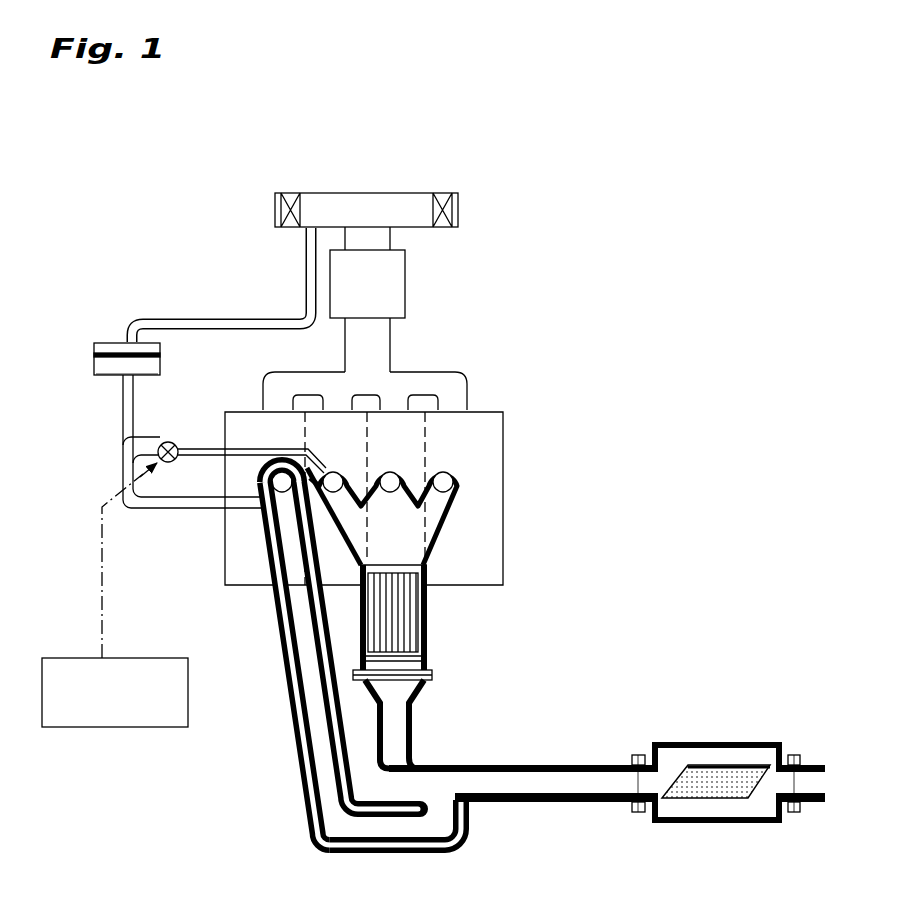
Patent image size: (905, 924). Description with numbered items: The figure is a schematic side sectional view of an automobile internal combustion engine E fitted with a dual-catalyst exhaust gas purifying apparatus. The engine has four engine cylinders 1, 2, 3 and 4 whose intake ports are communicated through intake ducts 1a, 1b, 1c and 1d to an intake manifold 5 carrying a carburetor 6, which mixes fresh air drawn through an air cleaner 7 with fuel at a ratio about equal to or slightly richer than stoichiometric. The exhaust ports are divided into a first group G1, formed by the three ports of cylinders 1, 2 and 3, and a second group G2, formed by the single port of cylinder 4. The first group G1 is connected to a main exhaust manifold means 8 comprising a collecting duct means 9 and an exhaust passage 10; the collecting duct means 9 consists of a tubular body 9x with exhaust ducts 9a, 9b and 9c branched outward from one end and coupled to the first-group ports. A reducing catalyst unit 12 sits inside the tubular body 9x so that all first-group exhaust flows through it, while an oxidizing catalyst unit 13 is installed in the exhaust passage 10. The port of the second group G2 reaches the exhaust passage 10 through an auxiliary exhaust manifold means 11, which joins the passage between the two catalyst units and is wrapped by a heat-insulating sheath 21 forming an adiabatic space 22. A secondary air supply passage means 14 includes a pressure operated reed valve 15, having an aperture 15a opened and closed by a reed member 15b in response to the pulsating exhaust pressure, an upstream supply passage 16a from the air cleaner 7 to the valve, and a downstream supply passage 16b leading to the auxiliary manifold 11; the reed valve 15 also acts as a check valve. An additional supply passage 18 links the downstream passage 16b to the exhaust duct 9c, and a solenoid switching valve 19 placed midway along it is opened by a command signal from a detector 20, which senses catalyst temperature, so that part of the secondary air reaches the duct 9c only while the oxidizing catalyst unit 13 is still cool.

The engine cylinder 1 is at (486, 471).
The engine cylinder 2 is at (423, 473).
The engine cylinder 3 is at (360, 473).
The engine cylinder 4 is at (256, 585).
The intake manifold 5 is at (375, 345).
The carburetor 6 is at (393, 278).
The air cleaner 7 is at (325, 193).
The main exhaust manifold means 8 is at (430, 738).
The collecting duct means 9 is at (433, 652).
The exhaust duct 9a is at (462, 483).
The exhaust duct 9b is at (440, 492).
The exhaust duct 9c is at (300, 498).
The tubular body 9x is at (423, 598).
The exhaust passage 10 is at (527, 763).
The auxiliary exhaust manifold means 11 is at (340, 840).
The reducing catalyst unit 12 is at (400, 618).
The oxidizing catalyst unit 13 is at (710, 742).
The secondary air supply passage means 14 is at (157, 509).
The pressure operated valve 15 is at (96, 336).
The aperture 15a is at (128, 352).
The reed member 15b is at (143, 367).
The upstream supply passage 16a is at (207, 320).
The downstream supply passage 16b is at (193, 509).
The additional supply passage 18 is at (205, 455).
The switching valve 19 is at (157, 447).
The detector 20 is at (120, 727).
The heat-insulating sheath 21 is at (298, 755).
The adiabatic space 22 is at (312, 828).
The intake duct 1a is at (447, 403).
The intake duct 1b is at (393, 405).
The intake duct 1c is at (338, 408).
The intake duct 1d is at (258, 405).
The internal combustion engine E is at (220, 573).
The first group G1 is at (493, 447).
The second group G2 is at (300, 447).